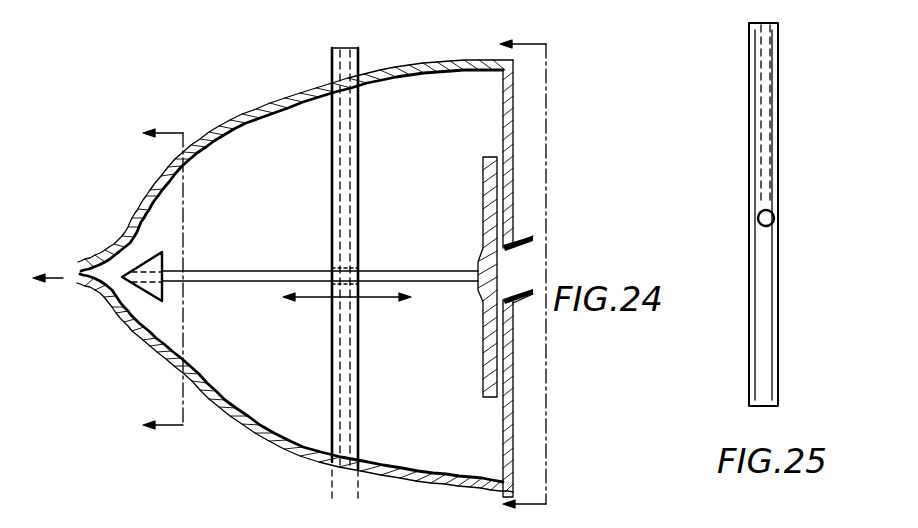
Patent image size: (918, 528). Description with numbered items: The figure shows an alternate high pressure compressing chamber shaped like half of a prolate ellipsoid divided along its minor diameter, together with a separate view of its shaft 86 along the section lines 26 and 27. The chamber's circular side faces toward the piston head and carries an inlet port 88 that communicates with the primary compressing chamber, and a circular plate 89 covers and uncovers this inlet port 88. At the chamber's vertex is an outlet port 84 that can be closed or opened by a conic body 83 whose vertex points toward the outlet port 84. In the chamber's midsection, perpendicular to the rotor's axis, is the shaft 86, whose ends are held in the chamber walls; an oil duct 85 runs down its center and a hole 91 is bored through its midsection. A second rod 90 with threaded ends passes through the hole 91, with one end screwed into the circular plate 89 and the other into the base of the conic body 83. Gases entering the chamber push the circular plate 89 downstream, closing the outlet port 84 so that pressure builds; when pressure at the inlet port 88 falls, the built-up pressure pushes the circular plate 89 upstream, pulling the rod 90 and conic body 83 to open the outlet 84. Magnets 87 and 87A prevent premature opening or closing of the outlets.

In FIG. 24, the section line 26- 26 is at (546, 278).
In FIG. 24, the section line 27- 27 is at (163, 282).
In FIG. 24, the conic body 83 is at (150, 293).
In FIG. 24, the outlet port 84 is at (92, 276).
In FIG. 24, the oil duct 85 is at (346, 127).
In FIG. 25, the oil duct 85 is at (762, 110).
In FIG. 24, the shaft 86 is at (358, 175).
In FIG. 25, the shaft 86 is at (749, 330).
In FIG. 24, the magnet 87 is at (516, 172).
In FIG. 24, the magnet 87A is at (510, 362).
In FIG. 24, the inlet port 88 is at (518, 266).
In FIG. 24, the circular plate 89 is at (482, 327).
In FIG. 24, the second rod 90 is at (256, 281).
In FIG. 24, the hole 91 is at (356, 268).
In FIG. 25, the hole 91 is at (757, 219).